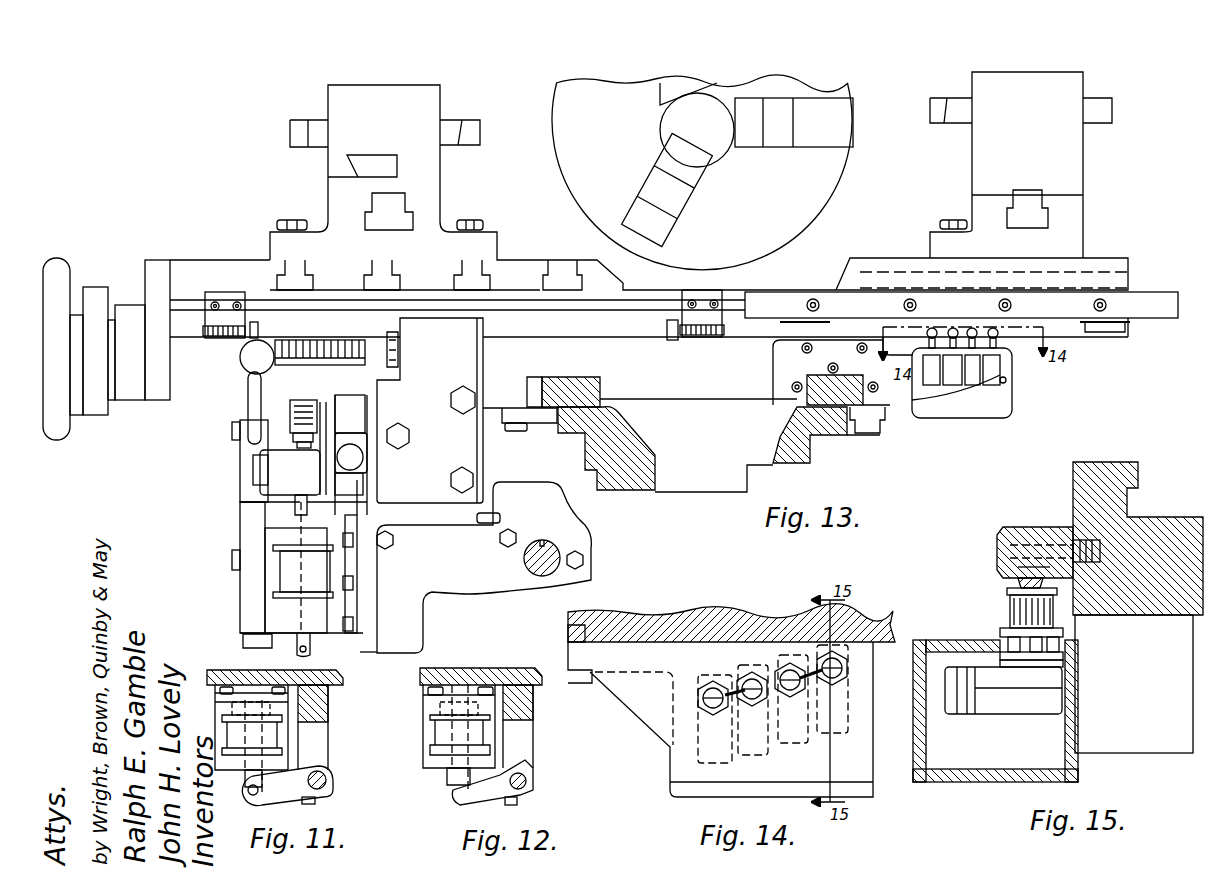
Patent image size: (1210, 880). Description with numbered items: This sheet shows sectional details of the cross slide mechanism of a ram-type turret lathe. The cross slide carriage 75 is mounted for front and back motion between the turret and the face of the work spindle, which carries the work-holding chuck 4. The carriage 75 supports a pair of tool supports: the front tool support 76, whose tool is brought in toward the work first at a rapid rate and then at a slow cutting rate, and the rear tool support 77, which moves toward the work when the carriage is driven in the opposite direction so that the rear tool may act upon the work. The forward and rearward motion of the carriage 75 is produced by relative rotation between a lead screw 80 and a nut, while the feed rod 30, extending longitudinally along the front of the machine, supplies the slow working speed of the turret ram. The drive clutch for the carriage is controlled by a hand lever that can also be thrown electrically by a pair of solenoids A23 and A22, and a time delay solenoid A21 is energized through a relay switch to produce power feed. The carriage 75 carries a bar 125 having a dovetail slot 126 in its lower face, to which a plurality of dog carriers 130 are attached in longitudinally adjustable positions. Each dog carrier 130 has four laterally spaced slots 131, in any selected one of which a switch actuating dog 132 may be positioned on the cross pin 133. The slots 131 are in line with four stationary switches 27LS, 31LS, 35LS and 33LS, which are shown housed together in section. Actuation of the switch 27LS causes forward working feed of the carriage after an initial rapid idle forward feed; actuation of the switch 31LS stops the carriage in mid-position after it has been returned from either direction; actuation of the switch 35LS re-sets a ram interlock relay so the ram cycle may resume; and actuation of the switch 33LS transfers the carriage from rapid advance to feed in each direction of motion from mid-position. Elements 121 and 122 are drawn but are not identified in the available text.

In FIG. 13, the work-holding chuck 4 is at (830, 173).
In FIG. 13, the cross slide carriage 75 is at (527, 262).
In FIG. 14, the cross slide carriage 75 is at (680, 625).
In FIG. 15, the cross slide carriage 75 is at (1117, 465).
In FIG. 13, the front tool support 76 is at (437, 207).
In FIG. 13, the rear tool support 77 is at (977, 168).
In FIG. 13, the lead screw 80 is at (303, 362).
In FIG. 13, the gear housing block 121 is at (389, 340).
In FIG. 13, the stop block 122 is at (258, 329).
In FIG. 13, the bar 125 is at (847, 302).
In FIG. 15, the bar 125 is at (1030, 527).
In FIG. 15, the dovetail slot 126 is at (1020, 567).
In FIG. 13, the dog carrier 130 is at (1107, 328).
In FIG. 15, the dog carrier 130 is at (1008, 589).
In FIG. 15, the slots 131 is at (1012, 605).
In FIG. 13, the switch actuating dog 132 is at (792, 328).
In FIG. 15, the switch actuating dog 132 is at (1078, 618).
In FIG. 15, the cross pin 133 is at (1010, 598).
In FIG. 13, the switch 27LS is at (933, 378).
In FIG. 14, the switch 27LS is at (721, 719).
In FIG. 13, the switch 31LS is at (950, 383).
In FIG. 14, the switch 31LS is at (752, 710).
In FIG. 13, the switch 33LS is at (993, 375).
In FIG. 14, the switch 33LS is at (832, 689).
In FIG. 13, the switch 35LS is at (975, 378).
In FIG. 14, the switch 35LS is at (798, 699).
In FIG. 13, the feed rod 30 is at (540, 577).
In FIG. 13, the solenoid A21 is at (283, 575).
In FIG. 12, the solenoid A22 is at (445, 733).
In FIG. 11, the solenoid A23 is at (240, 730).